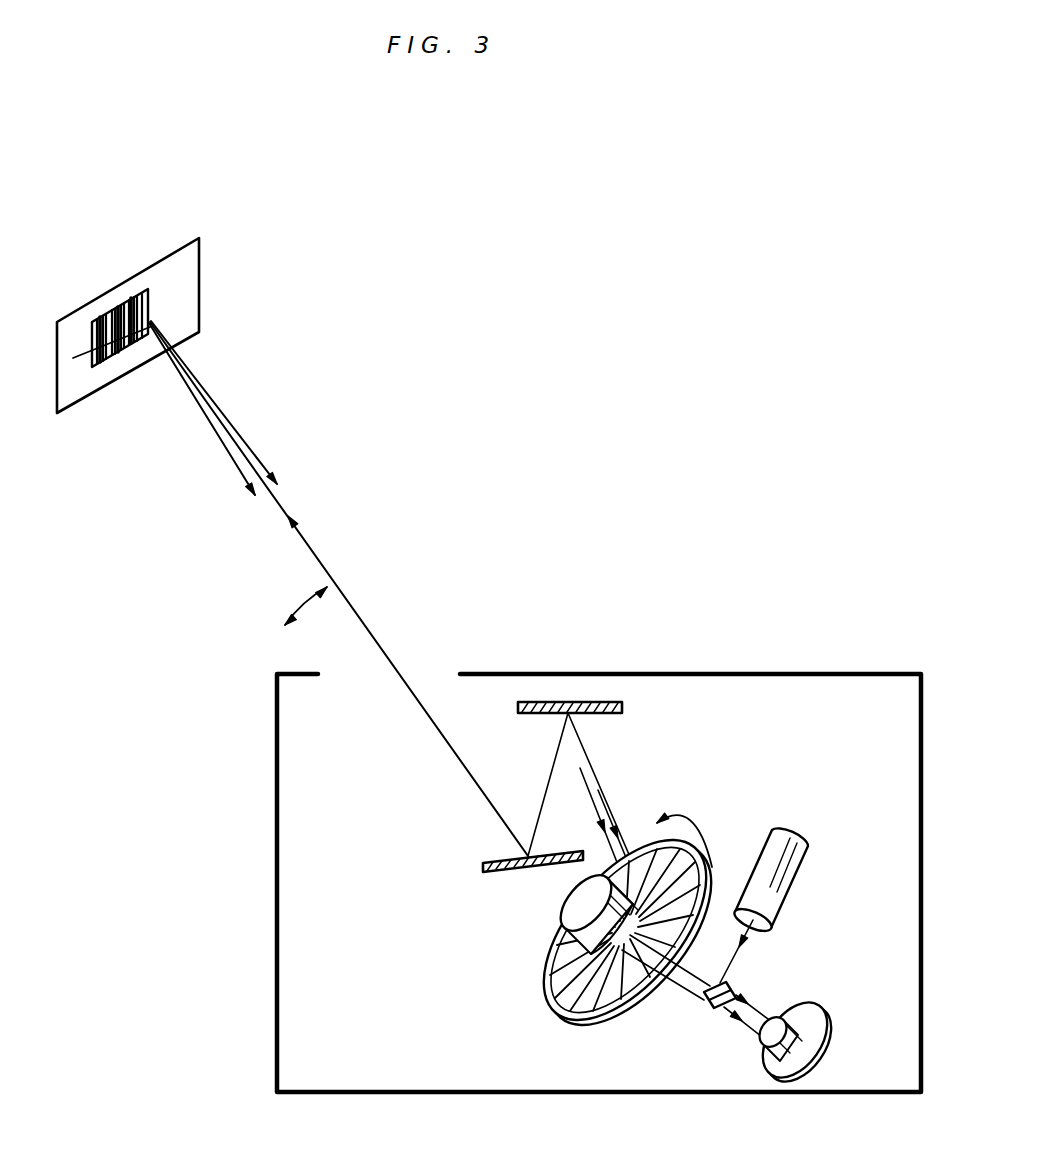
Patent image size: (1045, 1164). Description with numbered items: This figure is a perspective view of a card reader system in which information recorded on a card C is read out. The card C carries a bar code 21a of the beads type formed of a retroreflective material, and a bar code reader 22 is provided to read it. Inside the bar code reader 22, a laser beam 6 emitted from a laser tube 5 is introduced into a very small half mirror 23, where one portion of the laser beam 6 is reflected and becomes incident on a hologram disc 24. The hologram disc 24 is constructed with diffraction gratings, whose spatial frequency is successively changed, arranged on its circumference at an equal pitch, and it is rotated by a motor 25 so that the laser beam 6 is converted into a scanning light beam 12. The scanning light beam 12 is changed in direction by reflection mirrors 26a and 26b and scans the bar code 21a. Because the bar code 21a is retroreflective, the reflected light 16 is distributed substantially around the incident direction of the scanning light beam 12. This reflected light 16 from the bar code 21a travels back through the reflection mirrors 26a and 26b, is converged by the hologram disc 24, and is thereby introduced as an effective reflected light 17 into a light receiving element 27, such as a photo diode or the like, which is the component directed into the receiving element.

The card C is at (158, 270).
The bar code 21a is at (149, 297).
The scanning light beam 12 is at (308, 547).
The reflected light 16 is at (243, 436).
The bar code reader 22 is at (690, 673).
The reflection mirror 26a is at (616, 703).
The reflection mirror 26b is at (502, 858).
The hologram disc 24 is at (553, 997).
The motor 25 is at (563, 907).
The laser tube 5 is at (787, 832).
The laser beam 6 is at (737, 962).
The half mirror 23 is at (710, 1007).
The effective reflected light 17 is at (768, 1008).
The light receiving element 27 is at (823, 1037).